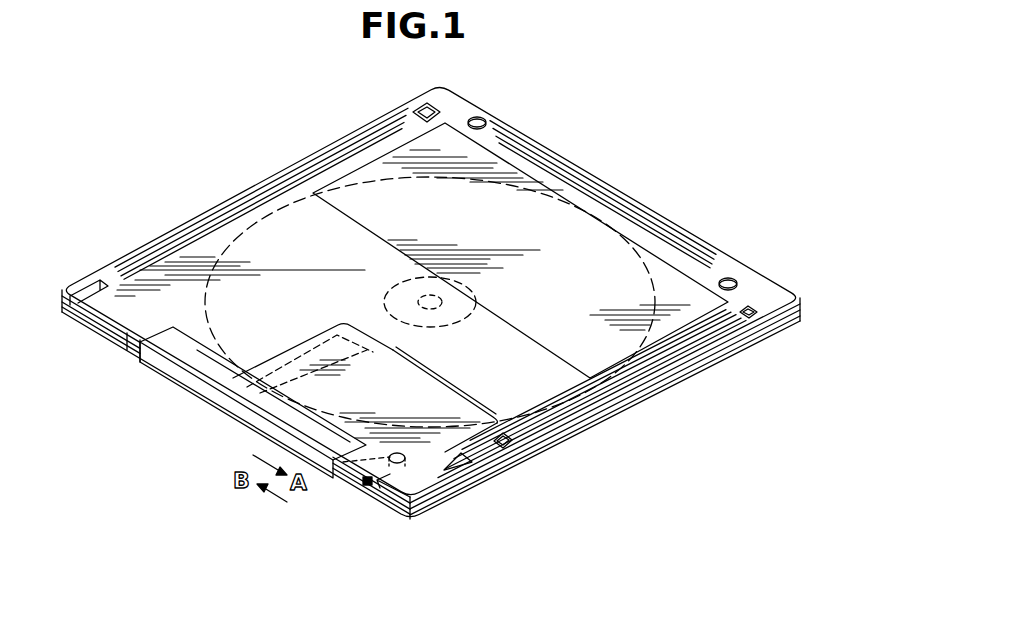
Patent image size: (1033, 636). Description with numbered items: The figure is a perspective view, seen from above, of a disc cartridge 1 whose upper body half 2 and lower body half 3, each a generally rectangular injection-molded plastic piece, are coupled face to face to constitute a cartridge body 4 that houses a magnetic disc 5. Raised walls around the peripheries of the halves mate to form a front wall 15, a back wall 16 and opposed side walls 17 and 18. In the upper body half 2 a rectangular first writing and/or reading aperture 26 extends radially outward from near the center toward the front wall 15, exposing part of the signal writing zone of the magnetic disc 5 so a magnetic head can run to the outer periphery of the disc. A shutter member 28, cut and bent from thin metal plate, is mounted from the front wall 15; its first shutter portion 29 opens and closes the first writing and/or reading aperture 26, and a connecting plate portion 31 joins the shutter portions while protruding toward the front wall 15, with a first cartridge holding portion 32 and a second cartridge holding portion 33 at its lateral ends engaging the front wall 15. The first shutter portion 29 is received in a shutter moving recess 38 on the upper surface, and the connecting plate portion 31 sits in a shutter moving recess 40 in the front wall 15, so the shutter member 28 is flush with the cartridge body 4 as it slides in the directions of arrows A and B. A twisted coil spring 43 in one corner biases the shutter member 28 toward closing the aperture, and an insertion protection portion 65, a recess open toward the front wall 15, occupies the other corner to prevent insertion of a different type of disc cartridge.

The disc cartridge 1 is at (448, 306).
The upper body half 2 is at (797, 323).
The lower body half 3 is at (777, 338).
The cartridge body 4 is at (836, 330).
The magnetic disc 5 is at (692, 233).
The front wall 15 is at (112, 342).
The back wall 16 is at (618, 180).
The side wall 17 is at (257, 183).
The side wall 18 is at (598, 432).
The first writing and/or reading aperture 26 is at (300, 375).
The shutter member 28 is at (235, 439).
The first shutter portion 29 is at (398, 353).
The connecting plate portion 31 is at (210, 398).
The first cartridge holding portion 32 is at (333, 456).
The second cartridge holding portion 33 is at (177, 358).
The shutter moving recess 38 is at (455, 396).
The shutter moving recess 40 is at (377, 497).
The twisted coil spring 43 is at (402, 470).
The insertion protection portion 65 is at (85, 315).